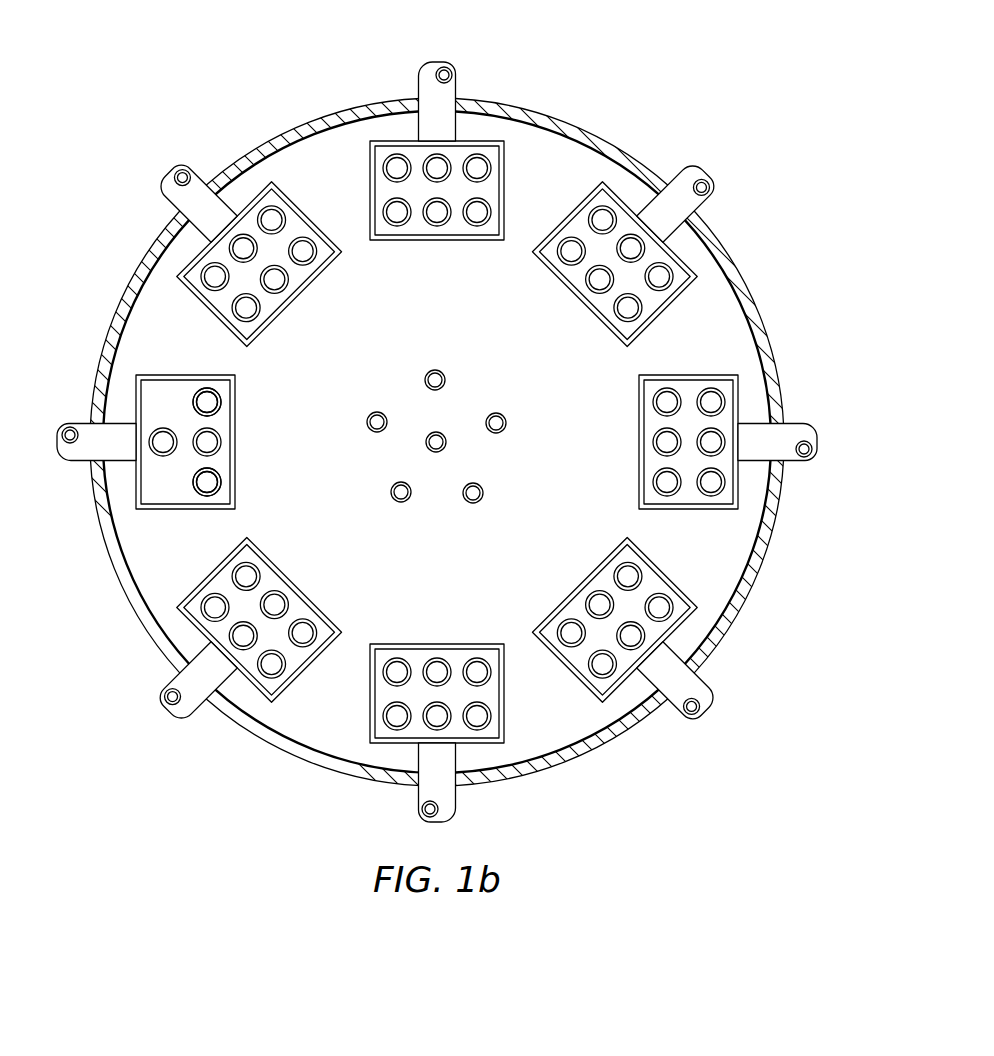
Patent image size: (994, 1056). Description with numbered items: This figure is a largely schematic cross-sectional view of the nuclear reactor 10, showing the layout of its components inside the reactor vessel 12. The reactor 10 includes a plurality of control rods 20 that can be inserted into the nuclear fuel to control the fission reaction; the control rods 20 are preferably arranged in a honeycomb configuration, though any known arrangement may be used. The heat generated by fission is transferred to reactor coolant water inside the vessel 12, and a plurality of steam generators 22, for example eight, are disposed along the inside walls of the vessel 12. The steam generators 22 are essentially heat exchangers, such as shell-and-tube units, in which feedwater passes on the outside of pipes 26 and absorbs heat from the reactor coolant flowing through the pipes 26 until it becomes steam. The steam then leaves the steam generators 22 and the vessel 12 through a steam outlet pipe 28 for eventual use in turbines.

The nuclear reactor 10 is at (631, 98).
The reactor vessel 12 is at (577, 758).
The control rods 20 is at (445, 448).
The steam generators 22 is at (236, 445).
The pipes 26 is at (221, 402).
The steam outlet pipe 28 is at (78, 452).